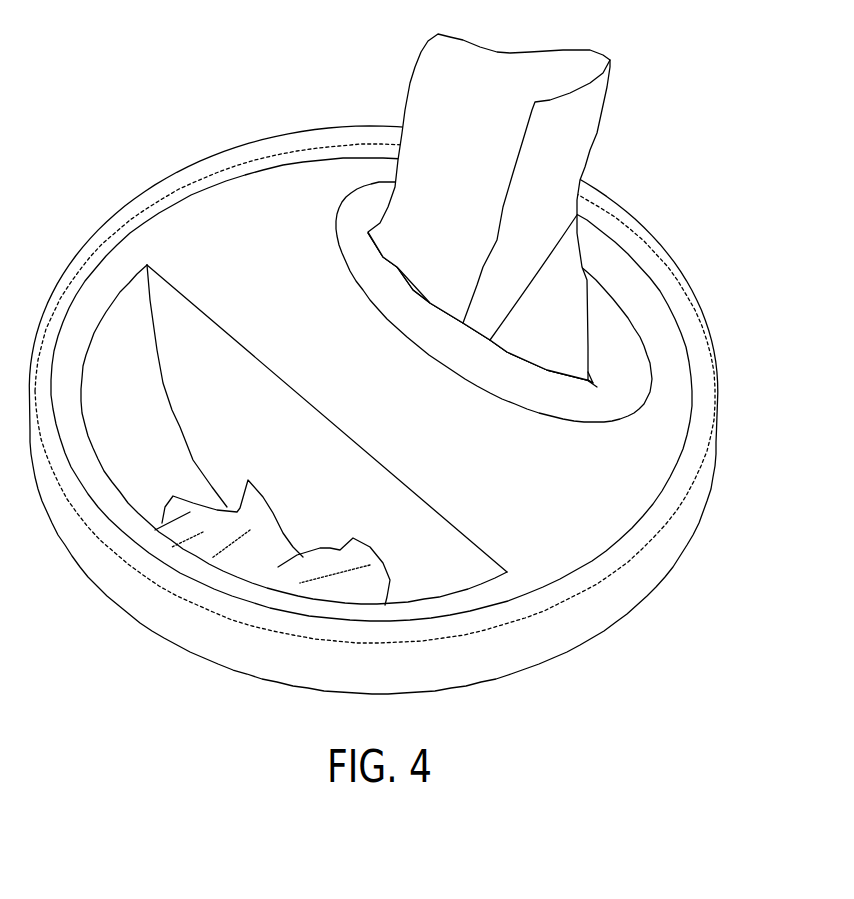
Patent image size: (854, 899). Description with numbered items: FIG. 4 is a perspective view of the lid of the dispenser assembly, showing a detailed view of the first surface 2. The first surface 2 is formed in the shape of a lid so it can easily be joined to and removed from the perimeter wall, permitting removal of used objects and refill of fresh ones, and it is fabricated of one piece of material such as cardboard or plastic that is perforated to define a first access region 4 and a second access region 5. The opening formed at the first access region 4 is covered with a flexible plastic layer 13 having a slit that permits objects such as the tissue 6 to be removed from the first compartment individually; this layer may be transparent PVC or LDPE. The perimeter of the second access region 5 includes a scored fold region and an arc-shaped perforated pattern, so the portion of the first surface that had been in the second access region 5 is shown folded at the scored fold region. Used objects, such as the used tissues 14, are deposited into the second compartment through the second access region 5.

The first surface 2 is at (608, 478).
The first access region 4 is at (608, 347).
The second access region 5 is at (333, 498).
The tissue 6 is at (503, 72).
The flexible plastic layer 13 is at (627, 373).
The used tissues 14 is at (202, 537).